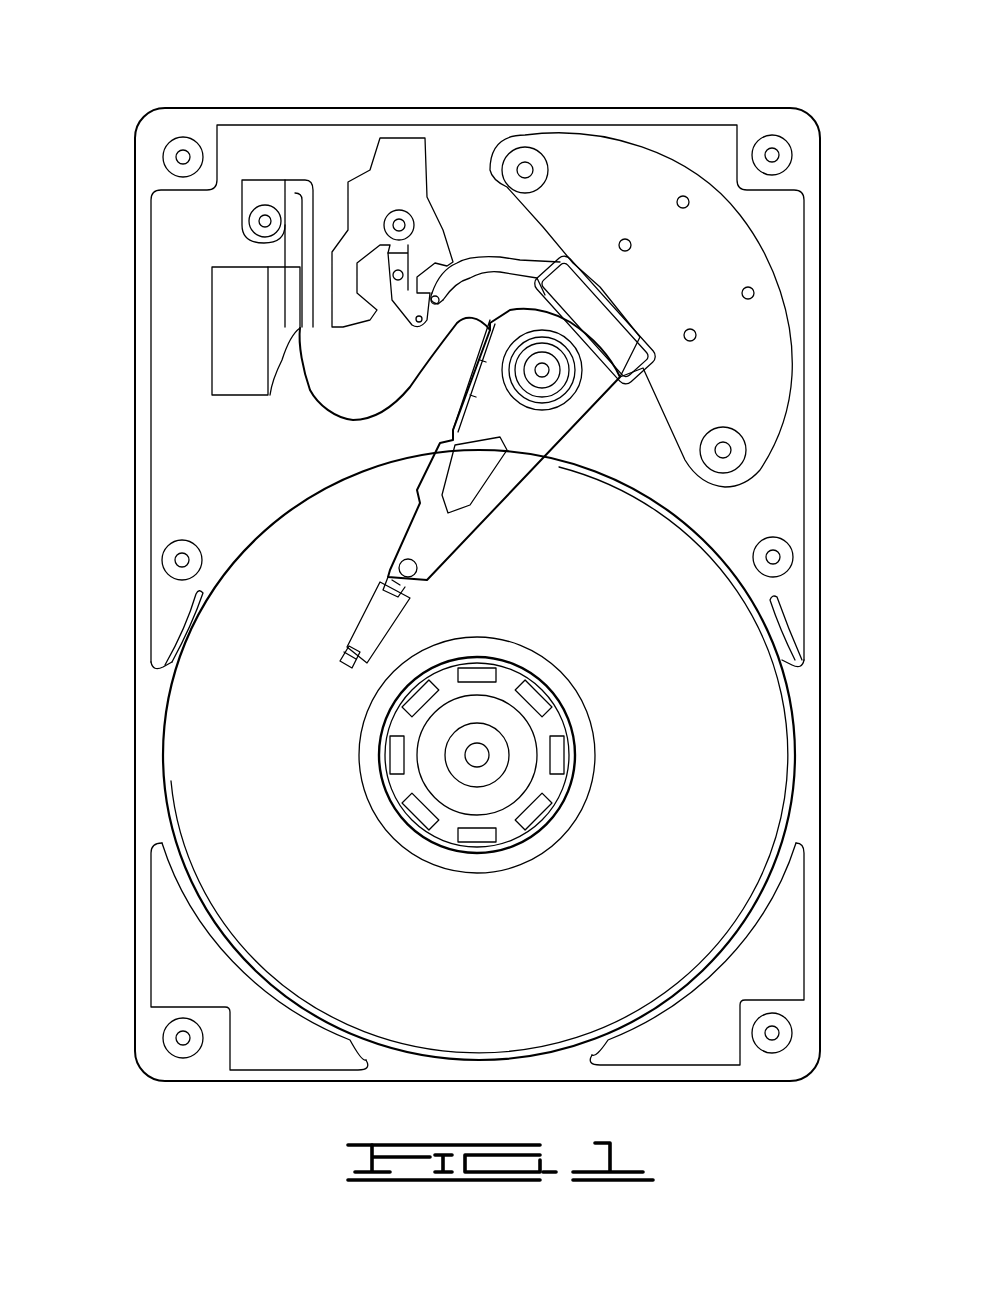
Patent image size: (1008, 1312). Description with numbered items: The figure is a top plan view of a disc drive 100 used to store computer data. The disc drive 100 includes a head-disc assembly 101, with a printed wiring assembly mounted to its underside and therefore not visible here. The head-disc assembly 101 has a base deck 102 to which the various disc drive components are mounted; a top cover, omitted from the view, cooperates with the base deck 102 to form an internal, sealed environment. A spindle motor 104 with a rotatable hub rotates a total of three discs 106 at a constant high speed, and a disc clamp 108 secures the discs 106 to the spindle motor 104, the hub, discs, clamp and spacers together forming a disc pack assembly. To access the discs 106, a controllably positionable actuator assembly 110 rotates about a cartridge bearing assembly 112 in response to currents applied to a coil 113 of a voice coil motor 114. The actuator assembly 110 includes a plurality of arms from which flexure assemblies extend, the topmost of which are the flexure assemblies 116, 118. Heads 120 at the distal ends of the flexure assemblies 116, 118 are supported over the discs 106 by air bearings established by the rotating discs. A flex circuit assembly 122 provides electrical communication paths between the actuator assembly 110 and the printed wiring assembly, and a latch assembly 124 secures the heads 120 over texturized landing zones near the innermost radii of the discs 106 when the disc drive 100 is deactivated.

The disc drive 100 is at (248, 88).
The head-disc assembly 101 is at (126, 240).
The base deck 102 is at (220, 458).
The spindle motor 104 is at (489, 784).
The discs 106 is at (718, 834).
The disc clamp 108 is at (378, 802).
The actuator assembly 110 is at (514, 447).
The cartridge bearing assembly 112 is at (550, 383).
The coil 113 is at (640, 333).
The voice coil motor 114 is at (577, 208).
The flexure assembly 116 is at (420, 543).
The flexure assembly 118 is at (373, 635).
The heads 120 is at (343, 655).
The flex circuit assembly 122 is at (338, 424).
The latch assembly 124 is at (402, 158).